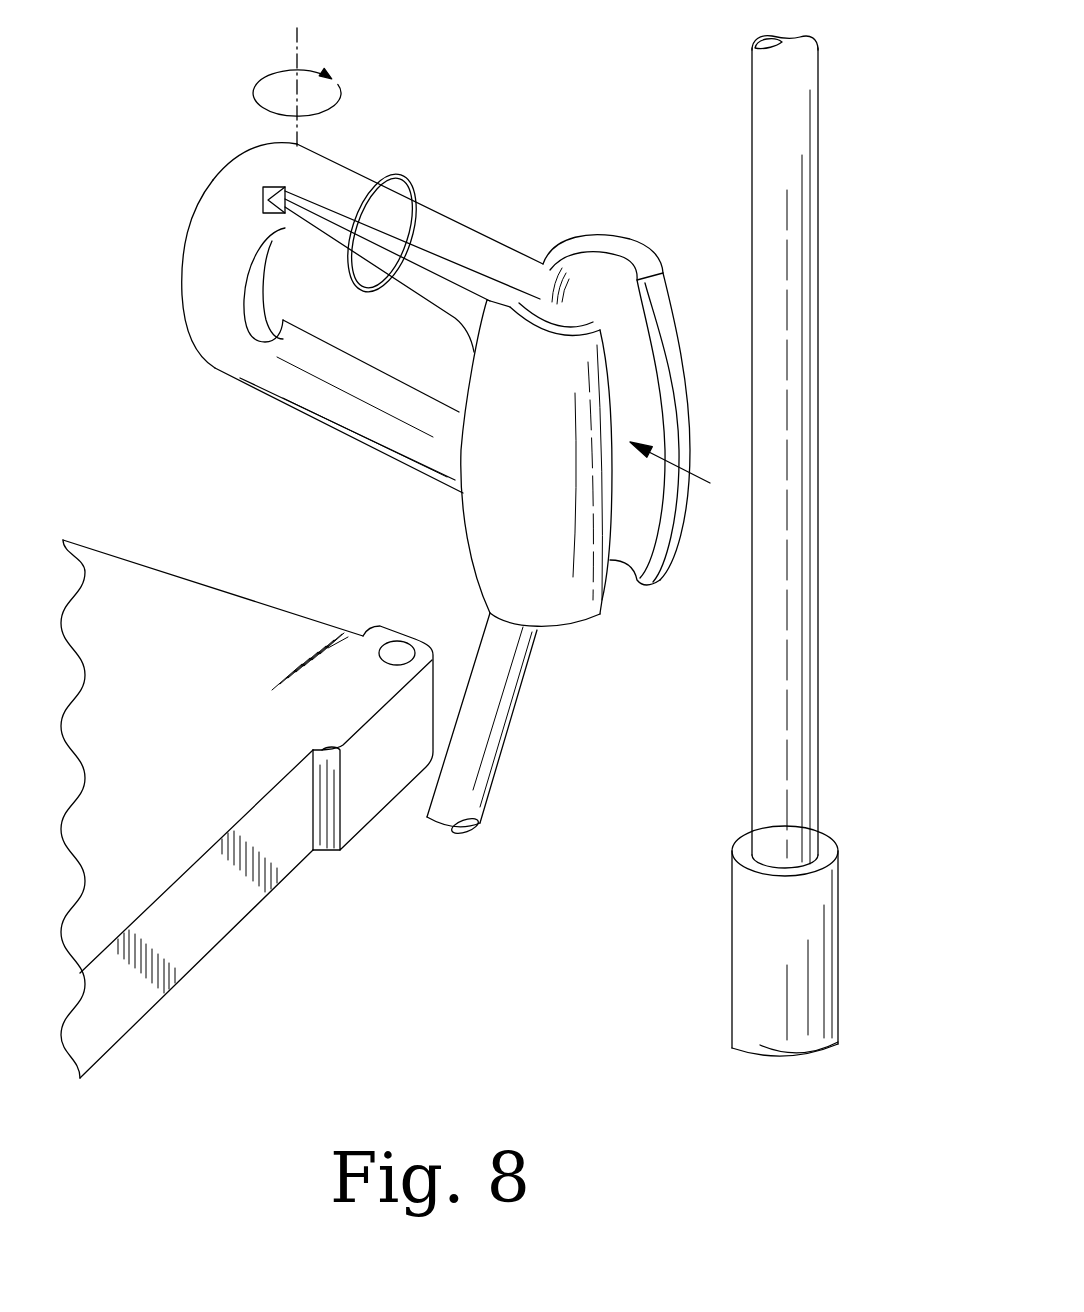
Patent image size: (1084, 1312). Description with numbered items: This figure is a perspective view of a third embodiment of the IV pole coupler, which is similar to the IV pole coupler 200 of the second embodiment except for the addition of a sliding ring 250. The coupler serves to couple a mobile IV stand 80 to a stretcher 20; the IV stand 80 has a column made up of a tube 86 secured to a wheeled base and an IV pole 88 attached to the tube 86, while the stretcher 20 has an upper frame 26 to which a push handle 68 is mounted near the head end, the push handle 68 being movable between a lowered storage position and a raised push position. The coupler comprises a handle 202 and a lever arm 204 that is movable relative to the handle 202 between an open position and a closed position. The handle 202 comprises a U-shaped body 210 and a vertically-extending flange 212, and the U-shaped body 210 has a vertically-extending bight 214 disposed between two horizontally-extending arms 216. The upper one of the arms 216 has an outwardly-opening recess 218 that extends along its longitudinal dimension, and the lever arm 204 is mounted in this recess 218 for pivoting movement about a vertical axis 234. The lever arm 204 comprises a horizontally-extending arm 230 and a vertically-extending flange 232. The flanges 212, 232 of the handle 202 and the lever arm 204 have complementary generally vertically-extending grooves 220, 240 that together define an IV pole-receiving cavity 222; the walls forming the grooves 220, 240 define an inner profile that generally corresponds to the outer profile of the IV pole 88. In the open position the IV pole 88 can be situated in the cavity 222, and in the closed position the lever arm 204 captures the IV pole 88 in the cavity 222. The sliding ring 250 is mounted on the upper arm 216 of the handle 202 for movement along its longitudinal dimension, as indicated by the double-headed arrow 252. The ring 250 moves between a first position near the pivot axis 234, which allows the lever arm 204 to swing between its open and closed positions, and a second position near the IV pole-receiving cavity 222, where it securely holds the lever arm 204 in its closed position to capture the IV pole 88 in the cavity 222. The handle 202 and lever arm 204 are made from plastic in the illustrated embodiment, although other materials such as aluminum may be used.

The stretcher 20 is at (128, 1056).
The upper frame 26 is at (210, 925).
The push handle 68 is at (530, 745).
The mobile IV stand 80 is at (829, 786).
The tube 86 is at (838, 920).
The IV pole 88 is at (808, 368).
The IV pole coupler 200 is at (607, 139).
The handle 202 is at (482, 222).
The lever arm 204 is at (430, 325).
The U-shaped body 210 is at (219, 146).
The vertically-extending flange 212 is at (616, 249).
The vertically-extending bight 214 is at (202, 270).
The horizontally-extending arms 216 is at (340, 146).
The outwardly-opening recess 218 is at (252, 200).
The groove 220 is at (620, 290).
The IV pole-receiving cavity 222 is at (630, 412).
The horizontally-extending arm 230 is at (335, 237).
The vertically-extending flange 232 is at (508, 507).
The vertical axis 234 is at (298, 44).
The groove 240 is at (562, 315).
The sliding ring 250 is at (381, 205).
The double-headed arrow 252 is at (456, 186).